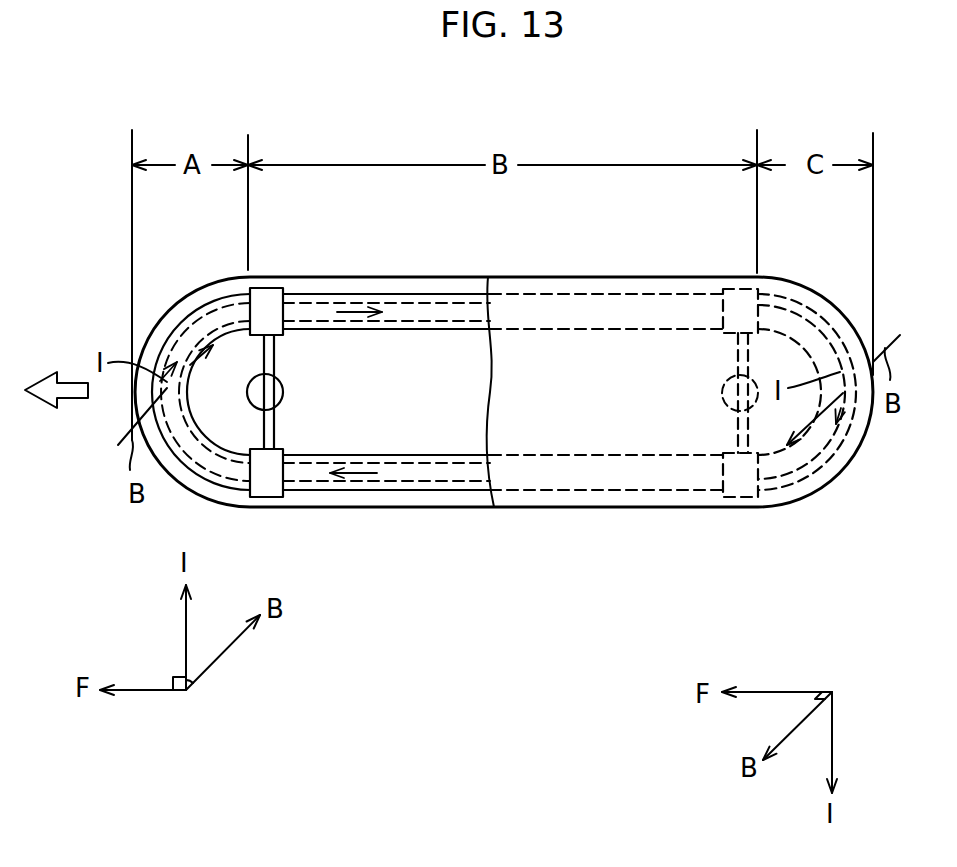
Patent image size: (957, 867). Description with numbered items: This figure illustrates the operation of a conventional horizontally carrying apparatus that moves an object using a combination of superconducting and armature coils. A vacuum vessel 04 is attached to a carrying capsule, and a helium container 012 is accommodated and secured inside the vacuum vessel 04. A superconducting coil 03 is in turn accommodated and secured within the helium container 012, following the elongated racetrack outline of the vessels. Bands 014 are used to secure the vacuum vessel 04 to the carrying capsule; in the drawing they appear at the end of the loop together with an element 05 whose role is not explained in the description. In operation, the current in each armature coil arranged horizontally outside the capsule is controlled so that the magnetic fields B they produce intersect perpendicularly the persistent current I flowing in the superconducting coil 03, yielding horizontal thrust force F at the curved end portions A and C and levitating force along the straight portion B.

The bands 014 is at (265, 497).
The helium container 012 is at (397, 490).
The superconducting coil 03 is at (458, 470).
The vacuum vessel 04 is at (527, 507).
The pulley 05 is at (283, 391).